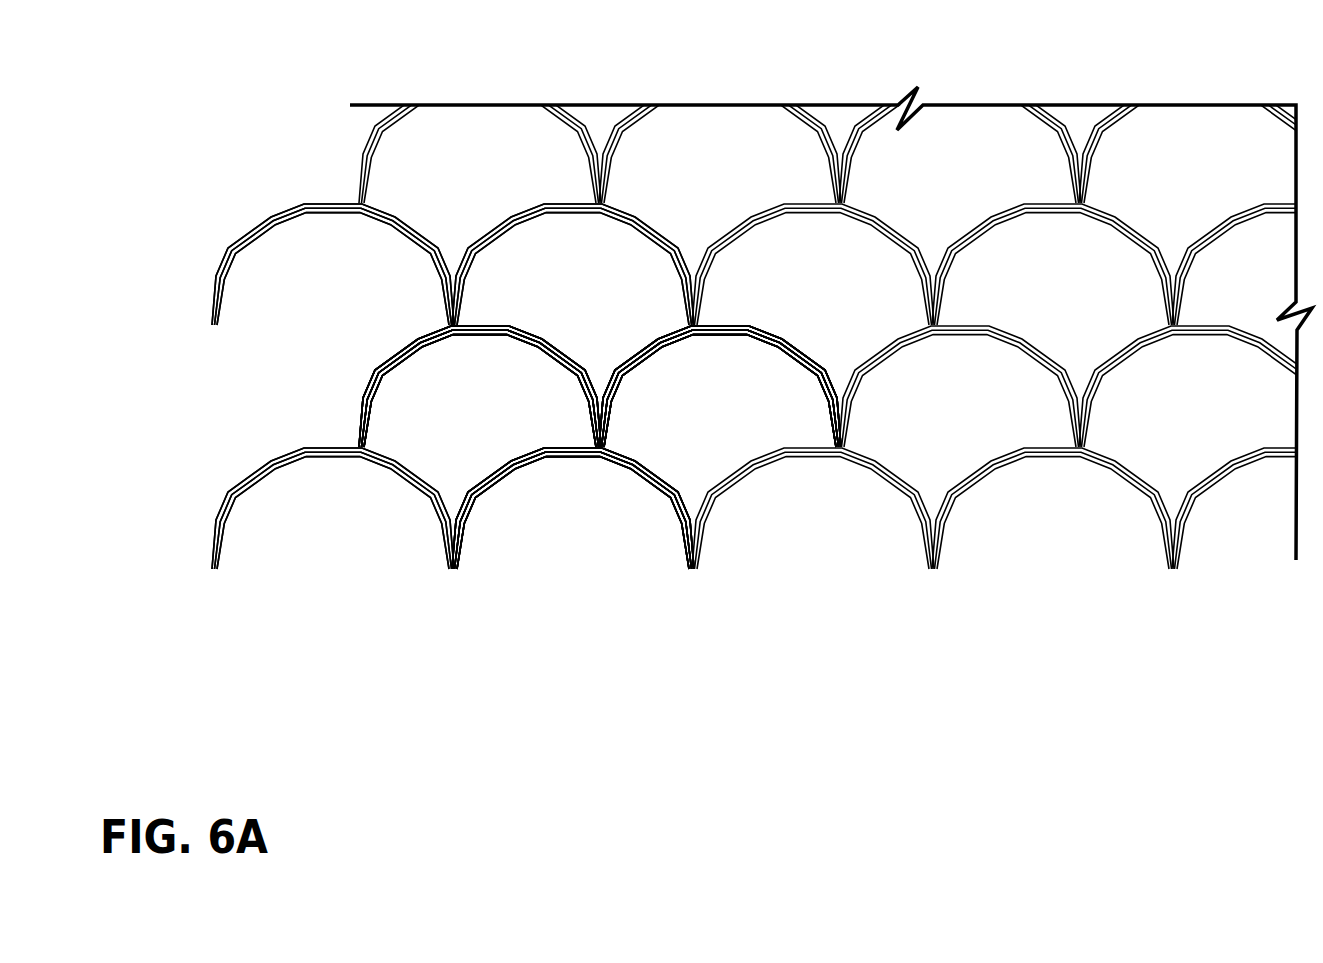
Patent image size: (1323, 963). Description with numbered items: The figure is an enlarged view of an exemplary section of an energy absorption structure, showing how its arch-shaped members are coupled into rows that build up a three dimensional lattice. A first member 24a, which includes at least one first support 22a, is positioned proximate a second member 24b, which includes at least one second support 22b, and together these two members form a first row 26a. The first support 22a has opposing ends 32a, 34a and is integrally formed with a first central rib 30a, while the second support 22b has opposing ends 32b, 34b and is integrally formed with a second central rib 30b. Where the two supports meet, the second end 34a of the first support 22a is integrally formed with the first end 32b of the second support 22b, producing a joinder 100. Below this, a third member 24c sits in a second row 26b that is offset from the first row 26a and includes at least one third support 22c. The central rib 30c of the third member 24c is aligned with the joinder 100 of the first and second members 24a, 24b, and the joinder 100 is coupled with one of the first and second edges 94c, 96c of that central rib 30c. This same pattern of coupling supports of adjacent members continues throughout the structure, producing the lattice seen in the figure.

The joinder 100 is at (604, 438).
The first support 22a is at (393, 356).
The second support 22b is at (773, 333).
The third support 22c is at (662, 491).
The first member 24a is at (408, 294).
The second member 24b is at (707, 330).
The third member 24c is at (487, 517).
The first row 26a is at (310, 393).
The second row 26b is at (195, 524).
The first central rib 30a is at (455, 330).
The second central rib 30b is at (769, 392).
The central rib 30c is at (580, 457).
The first end 32a is at (358, 448).
The first end 32b is at (600, 450).
The second end 34a is at (600, 447).
The second end 34b is at (842, 447).
The first edge 94c is at (601, 446).
The second edge 96c is at (543, 447).